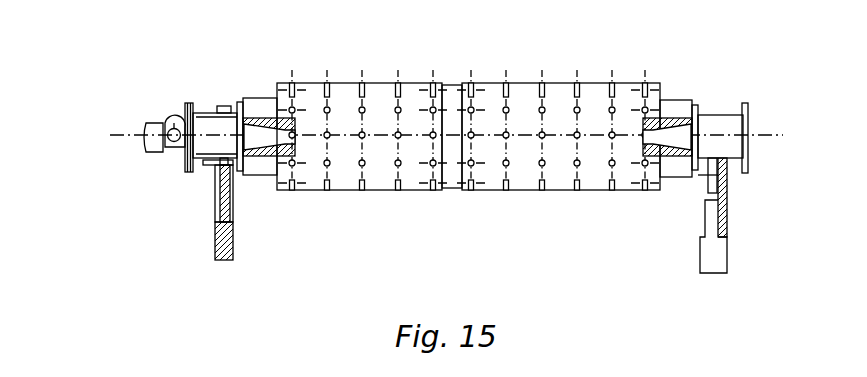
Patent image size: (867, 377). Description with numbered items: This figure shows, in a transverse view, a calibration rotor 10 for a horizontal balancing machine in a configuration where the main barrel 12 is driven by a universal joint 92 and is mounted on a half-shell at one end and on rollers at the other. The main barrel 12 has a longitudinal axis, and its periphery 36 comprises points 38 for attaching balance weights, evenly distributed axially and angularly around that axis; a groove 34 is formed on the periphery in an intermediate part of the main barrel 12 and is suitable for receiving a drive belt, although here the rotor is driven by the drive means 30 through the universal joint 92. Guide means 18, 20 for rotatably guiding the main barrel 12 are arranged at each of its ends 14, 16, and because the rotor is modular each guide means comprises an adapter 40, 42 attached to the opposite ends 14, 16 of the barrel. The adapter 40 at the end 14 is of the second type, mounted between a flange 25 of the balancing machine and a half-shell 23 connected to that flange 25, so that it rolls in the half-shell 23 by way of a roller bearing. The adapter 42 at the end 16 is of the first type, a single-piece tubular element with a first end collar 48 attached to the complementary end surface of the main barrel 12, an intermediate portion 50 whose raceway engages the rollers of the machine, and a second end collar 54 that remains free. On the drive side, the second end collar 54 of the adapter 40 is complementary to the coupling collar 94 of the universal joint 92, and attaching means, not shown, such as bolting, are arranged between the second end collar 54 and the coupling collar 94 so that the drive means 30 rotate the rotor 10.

The calibration rotor 10 is at (468, 131).
The main barrel 12 is at (379, 196).
The end of main barrel 14 is at (247, 110).
The end of main barrel 16 is at (690, 110).
The guide means 18 is at (198, 214).
The guide means 20 is at (689, 139).
The half-shell 23 is at (217, 127).
The flange 25 is at (228, 163).
The drive means 30 is at (113, 112).
The groove 34 is at (463, 125).
The periphery 36 is at (343, 183).
The points for attaching balance weights 38 is at (367, 110).
The adapter 40 is at (203, 123).
The adapter 42 is at (735, 123).
The first end collar 48 is at (706, 108).
The intermediate portion 50 is at (728, 148).
The second end collar 54 is at (203, 168).
The universal joint 92 is at (155, 142).
The coupling collar 94 is at (187, 172).